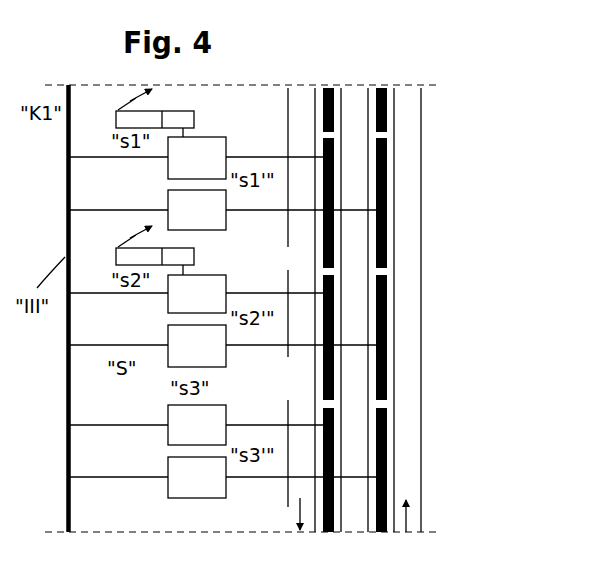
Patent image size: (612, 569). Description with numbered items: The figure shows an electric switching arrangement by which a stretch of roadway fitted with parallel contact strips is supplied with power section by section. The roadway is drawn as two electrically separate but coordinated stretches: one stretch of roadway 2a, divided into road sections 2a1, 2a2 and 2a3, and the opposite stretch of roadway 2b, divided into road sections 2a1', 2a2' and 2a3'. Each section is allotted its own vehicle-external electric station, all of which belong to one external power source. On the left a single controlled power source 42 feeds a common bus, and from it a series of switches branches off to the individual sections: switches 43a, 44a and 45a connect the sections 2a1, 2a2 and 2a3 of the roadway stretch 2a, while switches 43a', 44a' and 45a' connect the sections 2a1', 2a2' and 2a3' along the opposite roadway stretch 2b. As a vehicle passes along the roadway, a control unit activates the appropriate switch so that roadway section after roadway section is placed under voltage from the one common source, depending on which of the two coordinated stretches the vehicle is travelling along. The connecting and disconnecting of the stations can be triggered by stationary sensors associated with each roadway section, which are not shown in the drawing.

The roadway stretch 2a is at (328, 87).
The opposite roadway stretch 2b is at (393, 110).
The road section 2a1 is at (283, 189).
The road section 2a2 is at (283, 324).
The road section 2a3 is at (283, 456).
The road section 2a1' is at (434, 203).
The road section 2a2' is at (433, 337).
The road section 2a3' is at (430, 470).
The controlled power source 42 is at (65, 228).
The switch 43a is at (196, 159).
The switch 43a' is at (223, 207).
The switch 44a is at (196, 296).
The switch 44a' is at (223, 343).
The switch 45a is at (196, 420).
The switch 45a' is at (223, 471).